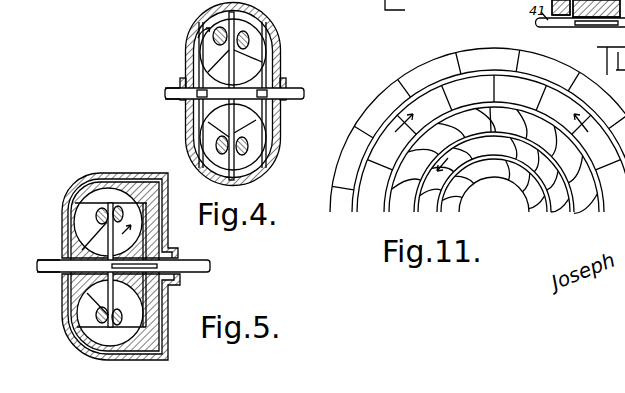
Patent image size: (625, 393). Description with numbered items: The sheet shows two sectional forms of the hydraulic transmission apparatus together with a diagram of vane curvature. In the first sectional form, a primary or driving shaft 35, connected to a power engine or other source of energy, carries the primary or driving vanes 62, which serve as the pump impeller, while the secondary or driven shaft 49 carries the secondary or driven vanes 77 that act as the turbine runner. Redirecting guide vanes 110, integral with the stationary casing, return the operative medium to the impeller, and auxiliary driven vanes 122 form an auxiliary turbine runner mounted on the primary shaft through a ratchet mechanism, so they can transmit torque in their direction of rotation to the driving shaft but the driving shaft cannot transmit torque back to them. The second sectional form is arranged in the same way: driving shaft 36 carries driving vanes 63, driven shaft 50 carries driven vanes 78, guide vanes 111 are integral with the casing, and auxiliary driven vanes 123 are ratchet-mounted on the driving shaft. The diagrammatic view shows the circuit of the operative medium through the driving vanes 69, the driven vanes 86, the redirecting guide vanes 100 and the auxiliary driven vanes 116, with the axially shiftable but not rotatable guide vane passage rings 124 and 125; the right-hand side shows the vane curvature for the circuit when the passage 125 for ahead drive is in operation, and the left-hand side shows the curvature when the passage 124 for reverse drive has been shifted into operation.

In FIG. 4, the primary driving vane 62 is at (196, 32).
In FIG. 4, the secondary driven vane 77 is at (252, 31).
In FIG. 4, the auxiliary driven vane 122 is at (198, 58).
In FIG. 4, the redirecting guide vane 110 is at (270, 51).
In FIG. 4, the secondary driven shaft 49 is at (297, 92).
In FIG. 4, the primary driving shaft 35 is at (179, 93).
In FIG. 5, the secondary driven vane 78 is at (110, 190).
In FIG. 5, the redirecting guide vane 111 is at (82, 218).
In FIG. 5, the primary driving vane 63 is at (133, 220).
In FIG. 5, the auxiliary driven vane 123 is at (98, 243).
In FIG. 5, the secondary driven shaft 50 is at (193, 265).
In FIG. 5, the primary driving shaft 36 is at (60, 274).
In FIG. 11, the redirecting guide vane 100 is at (477, 130).
In FIG. 11, the secondary driven vane 86 is at (491, 143).
In FIG. 11, the reverse guide vane passage ring 124 is at (494, 159).
In FIG. 11, the ahead guide vane passage ring 125 is at (557, 162).
In FIG. 11, the primary driving vane 69 is at (494, 174).
In FIG. 11, the auxiliary driven vane 116 is at (494, 184).